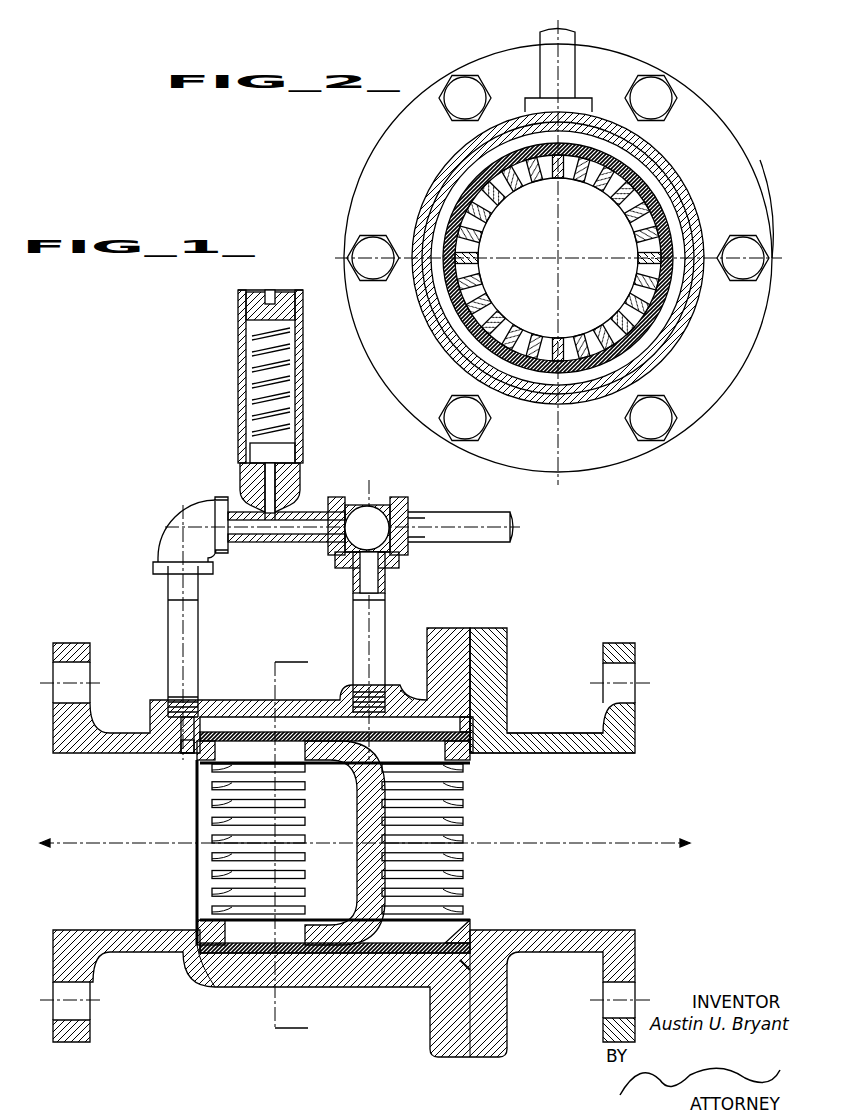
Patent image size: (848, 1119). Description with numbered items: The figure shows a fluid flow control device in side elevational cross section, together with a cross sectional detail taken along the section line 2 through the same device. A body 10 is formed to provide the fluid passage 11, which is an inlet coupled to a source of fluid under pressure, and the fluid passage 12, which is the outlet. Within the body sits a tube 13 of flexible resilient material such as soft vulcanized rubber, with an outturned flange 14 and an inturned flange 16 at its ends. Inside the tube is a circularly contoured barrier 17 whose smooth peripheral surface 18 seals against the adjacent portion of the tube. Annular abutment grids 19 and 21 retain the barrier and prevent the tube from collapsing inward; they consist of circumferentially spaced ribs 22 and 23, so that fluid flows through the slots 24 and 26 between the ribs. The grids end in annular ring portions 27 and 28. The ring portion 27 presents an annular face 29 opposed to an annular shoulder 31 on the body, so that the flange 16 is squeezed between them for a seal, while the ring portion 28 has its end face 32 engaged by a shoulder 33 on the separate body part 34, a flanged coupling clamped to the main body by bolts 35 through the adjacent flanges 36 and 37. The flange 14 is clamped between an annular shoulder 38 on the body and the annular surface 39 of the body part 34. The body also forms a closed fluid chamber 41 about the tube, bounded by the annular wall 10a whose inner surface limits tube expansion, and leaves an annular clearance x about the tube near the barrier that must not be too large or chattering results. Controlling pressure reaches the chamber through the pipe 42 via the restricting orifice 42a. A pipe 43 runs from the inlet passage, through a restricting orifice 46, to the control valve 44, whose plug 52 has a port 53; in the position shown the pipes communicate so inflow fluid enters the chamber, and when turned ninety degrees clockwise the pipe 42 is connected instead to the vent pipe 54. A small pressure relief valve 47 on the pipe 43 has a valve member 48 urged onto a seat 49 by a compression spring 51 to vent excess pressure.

In FIG. 1, the section line 2— 2 is at (283, 845).
In FIG. 2, the body 10 is at (708, 100).
In FIG. 1, the body 10 is at (202, 974).
In FIG. 2, the wall 10a is at (440, 166).
In FIG. 1, the wall 10a is at (257, 972).
In FIG. 1, the fluid passage 11 is at (72, 792).
In FIG. 1, the fluid passage 12 is at (632, 805).
In FIG. 2, the tube 13 is at (640, 331).
In FIG. 1, the tube 13 is at (380, 955).
In FIG. 1, the outturned flange 14 is at (472, 966).
In FIG. 1, the inturned flange 16 is at (186, 976).
In FIG. 2, the barrier 17 is at (598, 288).
In FIG. 1, the barrier 17 is at (358, 878).
In FIG. 2, the peripheral surface 18 is at (665, 300).
In FIG. 1, the peripheral surface 18 is at (326, 957).
In FIG. 2, the annular abutment grid 19 is at (488, 290).
In FIG. 1, the annular abutment grid 19 is at (201, 880).
In FIG. 1, the annular abutment grid 21 is at (478, 880).
In FIG. 2, the ribs 22 is at (527, 174).
In FIG. 1, the ribs 22 is at (225, 828).
In FIG. 1, the ribs 23 is at (455, 828).
In FIG. 2, the slots 24 is at (484, 215).
In FIG. 1, the slots 24 is at (225, 862).
In FIG. 1, the slots 26 is at (455, 862).
In FIG. 1, the annular ring portion 27 is at (226, 985).
In FIG. 1, the annular ring portion 28 is at (478, 926).
In FIG. 1, the annular face 29 is at (212, 735).
In FIG. 1, the annular shoulder 31 is at (205, 940).
In FIG. 1, the end face 32 is at (475, 756).
In FIG. 1, the shoulder 33 is at (480, 745).
In FIG. 1, the body part 34 is at (565, 740).
In FIG. 2, the bolts 35 is at (455, 110).
In FIG. 2, the flange 36 is at (730, 142).
In FIG. 1, the flange 36 is at (446, 632).
In FIG. 1, the flange 37 is at (490, 632).
In FIG. 1, the annular shoulder 38 is at (436, 990).
In FIG. 1, the annular surface 39 is at (472, 722).
In FIG. 2, the fluid chamber 41 is at (662, 186).
In FIG. 1, the fluid chamber 41 is at (342, 960).
In FIG. 2, the pipe 42 is at (568, 70).
In FIG. 1, the pipe 42 is at (352, 612).
In FIG. 1, the orifice 42a is at (410, 692).
In FIG. 1, the pipe 43 is at (168, 620).
In FIG. 1, the control valve 44 is at (360, 500).
In FIG. 1, the orifice 46 is at (188, 754).
In FIG. 1, the pressure relief valve 47 is at (240, 400).
In FIG. 1, the valve member 48 is at (252, 452).
In FIG. 1, the seat 49 is at (258, 480).
In FIG. 1, the compression spring 51 is at (256, 366).
In FIG. 1, the plug 52 is at (384, 503).
In FIG. 1, the port 53 is at (348, 545).
In FIG. 1, the vent pipe 54 is at (446, 538).
In FIG. 1, the clearance x is at (322, 732).